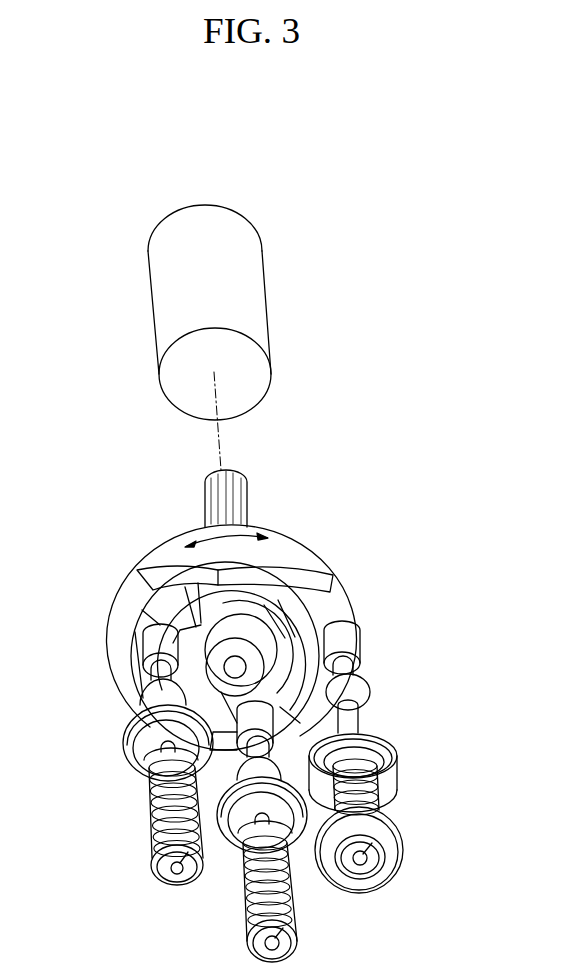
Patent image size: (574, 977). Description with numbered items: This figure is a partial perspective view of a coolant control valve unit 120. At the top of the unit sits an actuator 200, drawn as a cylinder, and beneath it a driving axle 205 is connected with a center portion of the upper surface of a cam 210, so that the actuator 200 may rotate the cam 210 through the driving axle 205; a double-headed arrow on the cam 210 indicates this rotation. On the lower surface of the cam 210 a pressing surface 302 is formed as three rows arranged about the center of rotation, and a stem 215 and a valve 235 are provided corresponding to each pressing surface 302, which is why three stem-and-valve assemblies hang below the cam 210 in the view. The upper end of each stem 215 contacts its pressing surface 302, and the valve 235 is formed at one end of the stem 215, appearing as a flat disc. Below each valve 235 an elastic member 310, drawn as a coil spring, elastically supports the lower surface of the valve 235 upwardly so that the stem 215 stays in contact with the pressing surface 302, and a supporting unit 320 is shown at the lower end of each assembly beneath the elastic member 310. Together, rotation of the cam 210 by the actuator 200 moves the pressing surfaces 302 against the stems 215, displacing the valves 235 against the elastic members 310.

The coolant control valve unit 120 is at (256, 693).
The actuator 200 is at (253, 303).
The driving axle 205 is at (228, 492).
The cam 210 is at (313, 563).
The pressing surface 302 is at (283, 617).
The stem 215 is at (352, 727).
The valve 235 is at (387, 745).
The elastic member 310 is at (375, 782).
The supporting unit 320 is at (392, 845).